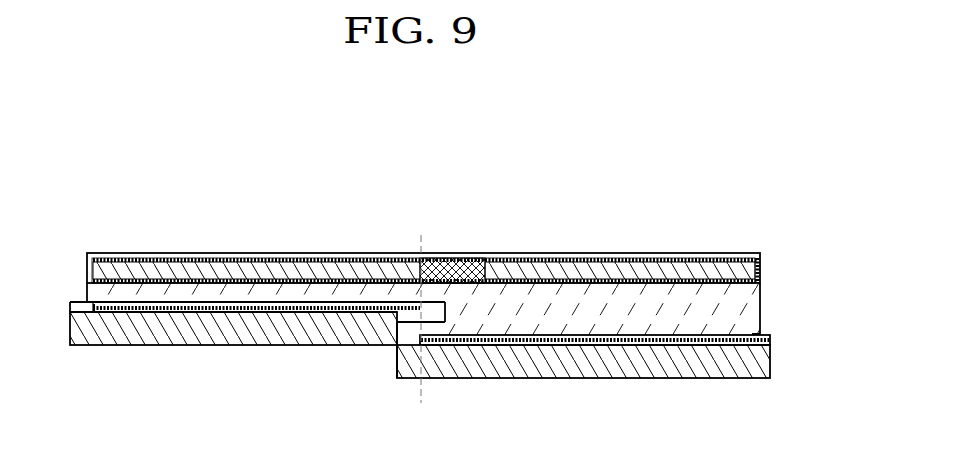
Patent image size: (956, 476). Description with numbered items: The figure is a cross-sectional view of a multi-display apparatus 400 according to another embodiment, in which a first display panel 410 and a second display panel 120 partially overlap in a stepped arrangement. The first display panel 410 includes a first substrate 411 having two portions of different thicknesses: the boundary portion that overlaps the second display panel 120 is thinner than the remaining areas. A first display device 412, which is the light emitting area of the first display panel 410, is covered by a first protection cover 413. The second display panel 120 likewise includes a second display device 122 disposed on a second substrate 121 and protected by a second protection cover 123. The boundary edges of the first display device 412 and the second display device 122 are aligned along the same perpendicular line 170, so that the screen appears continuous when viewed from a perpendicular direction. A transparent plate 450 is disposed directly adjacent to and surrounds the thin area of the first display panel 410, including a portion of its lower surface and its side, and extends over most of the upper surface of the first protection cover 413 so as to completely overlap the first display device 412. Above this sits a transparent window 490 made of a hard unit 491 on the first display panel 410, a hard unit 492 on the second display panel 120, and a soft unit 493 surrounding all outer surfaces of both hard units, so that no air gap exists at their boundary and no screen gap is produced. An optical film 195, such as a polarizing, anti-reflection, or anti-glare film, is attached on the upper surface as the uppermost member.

The multi-display apparatus 400 is at (108, 201).
The transparent window 490 is at (605, 191).
The hard unit 491 is at (318, 269).
The hard unit 492 is at (604, 270).
The soft unit 493 is at (446, 269).
The transparent plate 450 is at (690, 300).
The optical film 195 is at (756, 255).
The first display panel 410 is at (90, 349).
The first substrate 411 is at (70, 332).
The first display device 412 is at (92, 303).
The first protection cover 413 is at (70, 304).
The second display panel 120 is at (716, 381).
The second substrate 121 is at (771, 368).
The second display device 122 is at (755, 335).
The second protection cover 123 is at (771, 339).
The perpendicular line 170 is at (420, 336).